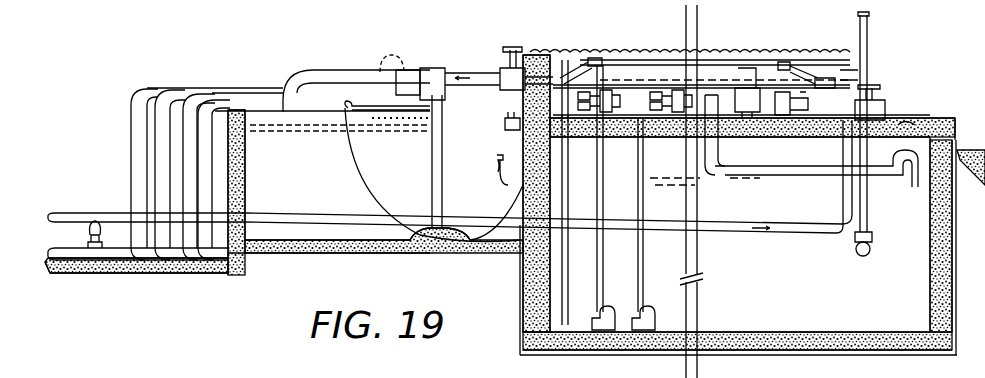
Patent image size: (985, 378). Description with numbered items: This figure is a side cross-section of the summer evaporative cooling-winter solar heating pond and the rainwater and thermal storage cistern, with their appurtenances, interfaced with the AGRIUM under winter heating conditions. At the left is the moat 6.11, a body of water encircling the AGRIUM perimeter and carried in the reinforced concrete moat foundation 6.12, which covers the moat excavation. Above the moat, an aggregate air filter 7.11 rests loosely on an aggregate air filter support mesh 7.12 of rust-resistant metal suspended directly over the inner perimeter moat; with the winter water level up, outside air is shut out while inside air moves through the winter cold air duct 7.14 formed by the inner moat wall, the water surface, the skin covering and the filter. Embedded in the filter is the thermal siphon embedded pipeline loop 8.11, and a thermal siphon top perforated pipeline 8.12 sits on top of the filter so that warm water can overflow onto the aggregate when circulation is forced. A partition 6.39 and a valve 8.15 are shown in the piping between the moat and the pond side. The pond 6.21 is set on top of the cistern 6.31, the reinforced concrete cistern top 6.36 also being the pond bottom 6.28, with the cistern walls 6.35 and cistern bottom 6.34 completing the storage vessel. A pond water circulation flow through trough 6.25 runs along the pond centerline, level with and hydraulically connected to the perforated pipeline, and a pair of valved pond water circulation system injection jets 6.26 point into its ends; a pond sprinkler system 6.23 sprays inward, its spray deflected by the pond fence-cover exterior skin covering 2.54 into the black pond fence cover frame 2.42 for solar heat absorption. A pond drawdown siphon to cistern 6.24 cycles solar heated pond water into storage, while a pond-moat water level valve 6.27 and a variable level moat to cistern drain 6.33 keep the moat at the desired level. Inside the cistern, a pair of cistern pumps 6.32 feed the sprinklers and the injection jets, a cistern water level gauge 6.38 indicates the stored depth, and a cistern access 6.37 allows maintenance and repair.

The aggregate air filter 7.11 is at (368, 72).
The aggregate air filter support mesh 7.12 is at (347, 110).
The winter cold air duct 7.14 is at (376, 120).
The moat 6.11 is at (312, 181).
The moat foundation 6.12 is at (412, 240).
The pond-moat water level valve 6.27 is at (500, 178).
The variable level moat to cistern drain 6.33 is at (505, 140).
The partition wall 6.39 is at (523, 268).
The thermal siphon embedded pipeline loop 8.11 is at (430, 92).
The thermal siphon top perforated pipeline 8.12 is at (397, 68).
The valve 8.15 is at (512, 52).
The valved pond water circulation system injection jets 6.26 is at (530, 97).
The pond fence-cover exterior skin covering 2.54 is at (598, 52).
The pond water circulation flow through trough 6.25 is at (690, 90).
The pond 6.21 is at (672, 115).
The pond sprinkler system 6.23 is at (740, 85).
The pond fence cover frame 2.42 is at (812, 58).
The cistern water level gauge 6.38 is at (868, 50).
The cistern top 6.36 is at (718, 140).
The pond bottom 6.28 is at (790, 125).
The pond drawdown siphon to cistern 6.24 is at (768, 172).
The cistern access 6.37 is at (905, 128).
The cistern pumps 6.32 is at (605, 318).
The cistern 6.31 is at (703, 291).
The cistern walls 6.35 is at (930, 292).
The cistern bottom 6.34 is at (840, 335).